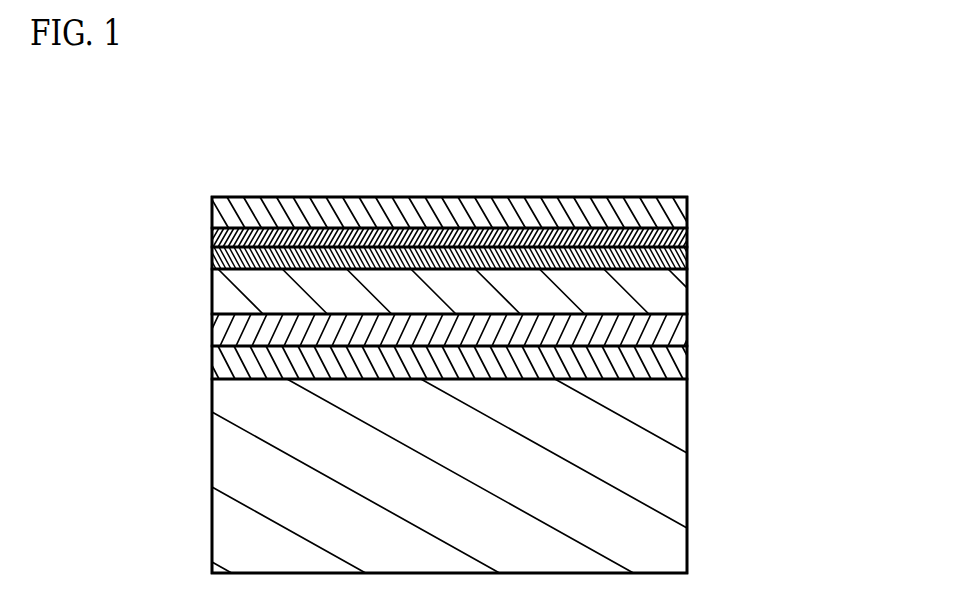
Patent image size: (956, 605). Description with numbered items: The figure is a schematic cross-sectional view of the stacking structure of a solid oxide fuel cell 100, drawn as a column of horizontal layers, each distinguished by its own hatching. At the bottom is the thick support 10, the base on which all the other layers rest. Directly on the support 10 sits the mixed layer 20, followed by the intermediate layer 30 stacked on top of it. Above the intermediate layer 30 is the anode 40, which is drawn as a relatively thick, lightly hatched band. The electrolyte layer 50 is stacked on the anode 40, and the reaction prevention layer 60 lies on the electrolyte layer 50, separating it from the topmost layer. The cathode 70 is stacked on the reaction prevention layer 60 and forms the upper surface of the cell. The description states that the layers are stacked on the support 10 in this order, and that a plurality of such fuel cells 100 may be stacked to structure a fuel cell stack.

The solid oxide fuel cell 100 is at (866, 159).
The support 10 is at (678, 461).
The mixed layer 20 is at (247, 368).
The intermediate layer 30 is at (675, 332).
The anode 40 is at (220, 297).
The electrolyte layer 50 is at (682, 255).
The reaction prevention layer 60 is at (216, 241).
The cathode 70 is at (675, 210).